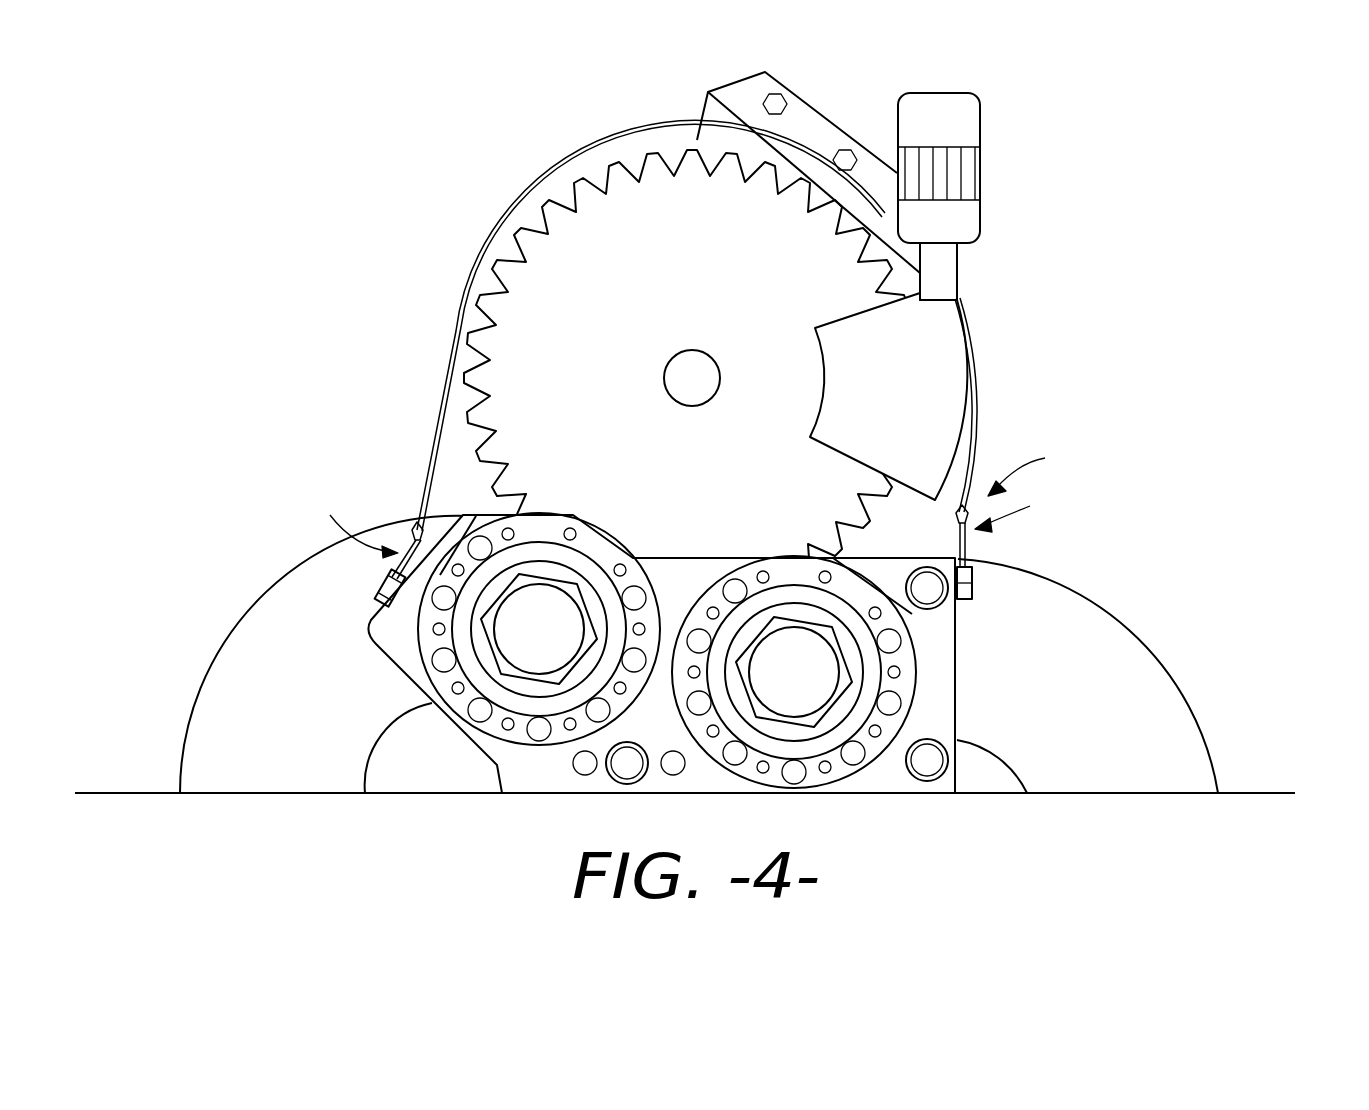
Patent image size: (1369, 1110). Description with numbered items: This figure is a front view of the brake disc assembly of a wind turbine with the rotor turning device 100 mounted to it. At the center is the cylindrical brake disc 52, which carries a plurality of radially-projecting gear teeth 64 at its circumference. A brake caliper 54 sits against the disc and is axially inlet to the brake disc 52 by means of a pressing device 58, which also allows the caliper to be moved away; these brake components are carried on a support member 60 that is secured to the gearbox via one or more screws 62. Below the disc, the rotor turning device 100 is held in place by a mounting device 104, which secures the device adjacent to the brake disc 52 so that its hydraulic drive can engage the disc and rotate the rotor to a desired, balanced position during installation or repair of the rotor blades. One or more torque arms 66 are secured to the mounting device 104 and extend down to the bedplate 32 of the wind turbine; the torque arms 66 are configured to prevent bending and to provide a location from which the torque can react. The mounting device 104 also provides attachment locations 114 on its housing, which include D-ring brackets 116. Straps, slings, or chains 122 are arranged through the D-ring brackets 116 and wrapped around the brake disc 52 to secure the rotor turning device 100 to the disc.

The bedplate 32 is at (1243, 793).
The brake disc 52 is at (678, 378).
The brake caliper 54 is at (938, 372).
The pressing device 58 is at (985, 172).
The support member 60 is at (808, 147).
The screws 62 is at (770, 97).
The gear teeth 64 is at (493, 305).
The torque arms 66 is at (268, 628).
The rotor turning device 100 is at (1044, 467).
The mounting device 104 is at (943, 683).
The attachment locations 114 is at (685, 519).
The D-ring brackets 116 is at (408, 532).
The straps, slings, or chains 122 is at (540, 190).